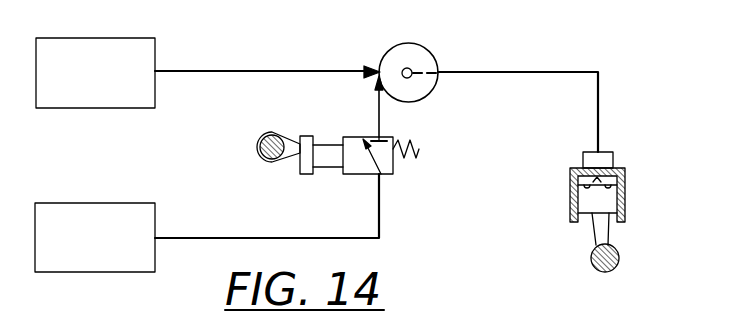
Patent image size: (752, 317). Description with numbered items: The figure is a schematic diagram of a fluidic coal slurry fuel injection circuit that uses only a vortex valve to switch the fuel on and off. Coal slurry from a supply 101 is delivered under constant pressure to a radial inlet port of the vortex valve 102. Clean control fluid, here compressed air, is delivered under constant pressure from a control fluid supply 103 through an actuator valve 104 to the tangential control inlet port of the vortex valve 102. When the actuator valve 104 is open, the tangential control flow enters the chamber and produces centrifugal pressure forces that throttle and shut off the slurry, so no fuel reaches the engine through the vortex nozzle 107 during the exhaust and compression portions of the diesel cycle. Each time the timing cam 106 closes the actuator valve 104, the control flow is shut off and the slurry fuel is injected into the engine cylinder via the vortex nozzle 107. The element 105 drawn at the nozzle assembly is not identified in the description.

The coal slurry supply 101 is at (110, 38).
The vortex valve 102 is at (428, 47).
The control fluid supply 103 is at (118, 203).
The actuator valve 104 is at (363, 173).
The nozzle assembly 105 is at (625, 198).
The timing cam 106 is at (291, 130).
The vortex nozzle 107 is at (613, 155).